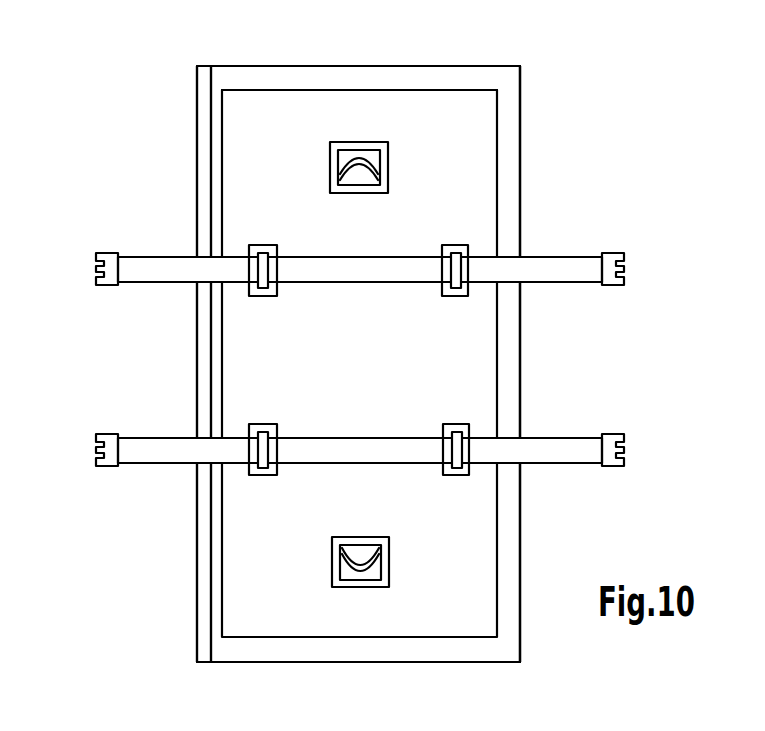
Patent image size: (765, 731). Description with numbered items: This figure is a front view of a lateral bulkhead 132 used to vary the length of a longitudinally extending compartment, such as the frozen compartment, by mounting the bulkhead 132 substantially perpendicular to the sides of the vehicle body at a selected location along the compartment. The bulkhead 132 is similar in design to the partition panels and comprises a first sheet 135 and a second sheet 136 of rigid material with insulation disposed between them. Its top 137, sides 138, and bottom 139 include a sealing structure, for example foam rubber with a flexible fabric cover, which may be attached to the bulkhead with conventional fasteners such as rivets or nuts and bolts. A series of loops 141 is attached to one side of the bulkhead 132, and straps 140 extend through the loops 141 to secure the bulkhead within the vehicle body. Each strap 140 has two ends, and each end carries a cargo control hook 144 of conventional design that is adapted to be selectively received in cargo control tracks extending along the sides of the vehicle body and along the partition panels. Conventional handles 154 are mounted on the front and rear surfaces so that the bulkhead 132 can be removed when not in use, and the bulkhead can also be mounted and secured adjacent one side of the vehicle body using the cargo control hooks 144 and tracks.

The lateral bulkhead 132 is at (540, 148).
The first sheet 135 is at (268, 110).
The second sheet 136 is at (403, 110).
The top 137 is at (488, 62).
The sides 138 is at (198, 311).
The bottom 139 is at (325, 662).
The strap 140 is at (336, 268).
The loops 141 is at (262, 257).
The cargo control hook 144 is at (104, 245).
The handles 154 is at (388, 162).